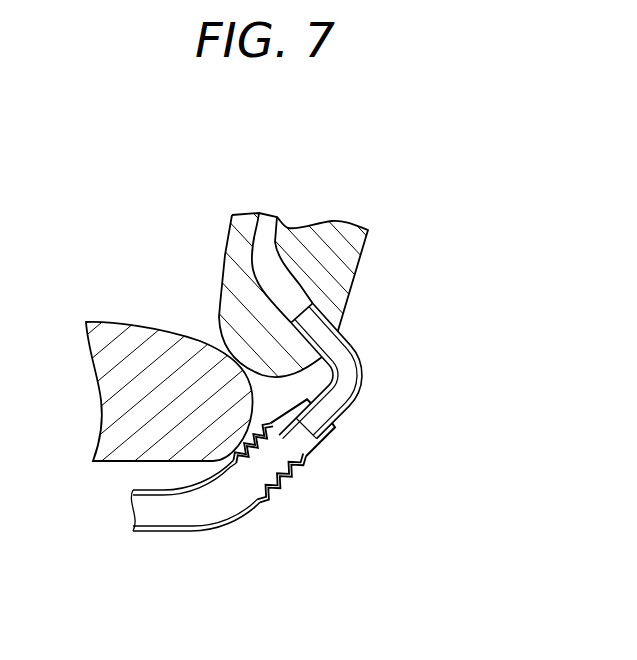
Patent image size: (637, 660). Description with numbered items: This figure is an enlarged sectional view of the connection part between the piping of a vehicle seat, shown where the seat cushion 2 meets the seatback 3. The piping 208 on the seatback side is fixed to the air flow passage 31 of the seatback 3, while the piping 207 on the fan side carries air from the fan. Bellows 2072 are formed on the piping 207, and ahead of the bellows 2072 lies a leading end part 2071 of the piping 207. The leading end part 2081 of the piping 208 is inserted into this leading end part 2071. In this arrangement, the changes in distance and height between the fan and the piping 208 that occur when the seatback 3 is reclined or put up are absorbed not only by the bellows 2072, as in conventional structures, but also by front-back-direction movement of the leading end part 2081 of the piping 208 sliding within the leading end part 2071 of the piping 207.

The seat cushion 2 is at (140, 337).
The seatback 3 is at (347, 260).
The air flow passage 31 is at (283, 283).
The piping 207 is at (160, 533).
The leading end part 2071 is at (312, 452).
The bellows 2072 is at (283, 490).
The piping 208 is at (360, 357).
The leading end part 2081 is at (353, 403).